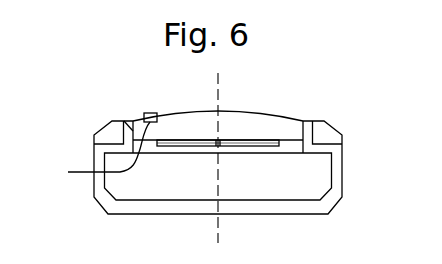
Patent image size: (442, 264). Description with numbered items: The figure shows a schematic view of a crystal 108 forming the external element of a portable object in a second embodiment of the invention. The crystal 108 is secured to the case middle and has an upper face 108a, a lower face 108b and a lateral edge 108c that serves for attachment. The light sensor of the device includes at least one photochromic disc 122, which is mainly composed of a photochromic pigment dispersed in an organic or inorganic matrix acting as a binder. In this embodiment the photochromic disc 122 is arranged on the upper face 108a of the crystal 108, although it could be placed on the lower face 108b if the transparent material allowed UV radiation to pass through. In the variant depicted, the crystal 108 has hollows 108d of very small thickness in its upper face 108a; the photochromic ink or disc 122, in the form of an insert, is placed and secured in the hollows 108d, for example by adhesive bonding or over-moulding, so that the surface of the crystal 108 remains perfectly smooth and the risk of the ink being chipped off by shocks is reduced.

The crystal 108 is at (191, 125).
The upper face 108a is at (270, 115).
The lower face 108b is at (287, 147).
The lateral edge 108c is at (124, 121).
The hollows 108d is at (86, 152).
The photochromic disc 122 is at (147, 111).